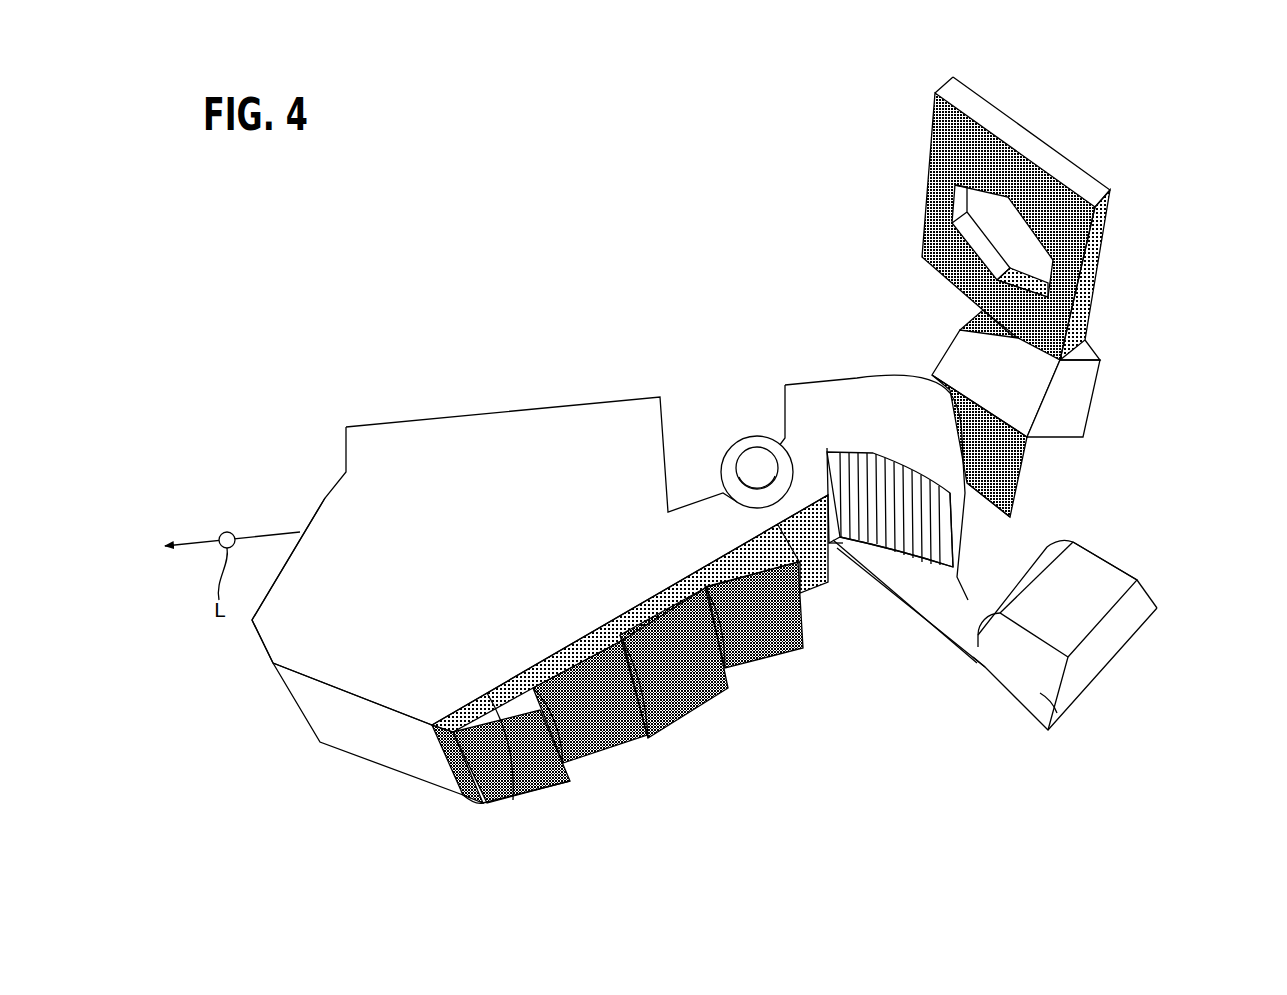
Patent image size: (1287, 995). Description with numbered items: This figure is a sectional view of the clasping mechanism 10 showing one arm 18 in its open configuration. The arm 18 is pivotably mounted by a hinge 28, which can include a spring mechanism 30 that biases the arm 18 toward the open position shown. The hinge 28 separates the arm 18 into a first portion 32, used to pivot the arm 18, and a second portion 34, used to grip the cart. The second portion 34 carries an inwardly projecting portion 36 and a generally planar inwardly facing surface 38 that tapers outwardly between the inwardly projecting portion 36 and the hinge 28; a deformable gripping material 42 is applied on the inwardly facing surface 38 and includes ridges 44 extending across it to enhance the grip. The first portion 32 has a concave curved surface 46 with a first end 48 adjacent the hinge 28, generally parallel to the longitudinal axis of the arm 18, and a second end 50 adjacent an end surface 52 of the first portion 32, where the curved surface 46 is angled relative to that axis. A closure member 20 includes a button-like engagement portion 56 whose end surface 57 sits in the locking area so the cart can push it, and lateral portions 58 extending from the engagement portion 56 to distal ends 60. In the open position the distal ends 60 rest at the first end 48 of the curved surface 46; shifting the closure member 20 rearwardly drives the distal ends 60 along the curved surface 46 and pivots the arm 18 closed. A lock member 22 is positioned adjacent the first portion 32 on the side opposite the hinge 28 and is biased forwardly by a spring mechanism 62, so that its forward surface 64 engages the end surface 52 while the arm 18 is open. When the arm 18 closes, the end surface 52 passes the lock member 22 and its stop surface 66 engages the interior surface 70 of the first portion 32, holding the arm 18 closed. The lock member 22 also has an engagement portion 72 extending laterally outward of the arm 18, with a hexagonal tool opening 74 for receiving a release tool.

The clasping mechanism 10 is at (592, 218).
The arm 18 is at (433, 446).
The closure member 20 is at (1108, 563).
The lock member 22 is at (1030, 417).
The hinge 28 is at (757, 460).
The spring mechanism 30 is at (718, 484).
The first portion 32 is at (878, 390).
The second portion 34 is at (342, 542).
The inwardly projecting portion 36 is at (378, 672).
The inwardly facing surface 38 is at (513, 800).
The gripping material 42 is at (593, 720).
The ridges 44 is at (660, 728).
The curved surface 46 is at (862, 460).
The first end 48 is at (833, 447).
The second end 50 is at (942, 517).
The end surface 52 is at (970, 473).
The engagement portion 56 is at (1077, 610).
The end surface 57 is at (1050, 720).
The lateral portion 58 is at (950, 628).
The distal end 60 is at (843, 543).
The spring mechanism 62 is at (1085, 340).
The forward surface 64 is at (970, 417).
The stop surface 66 is at (945, 352).
The interior surface 70 is at (950, 563).
The engagement portion 72 is at (947, 110).
The tool opening 74 is at (980, 220).